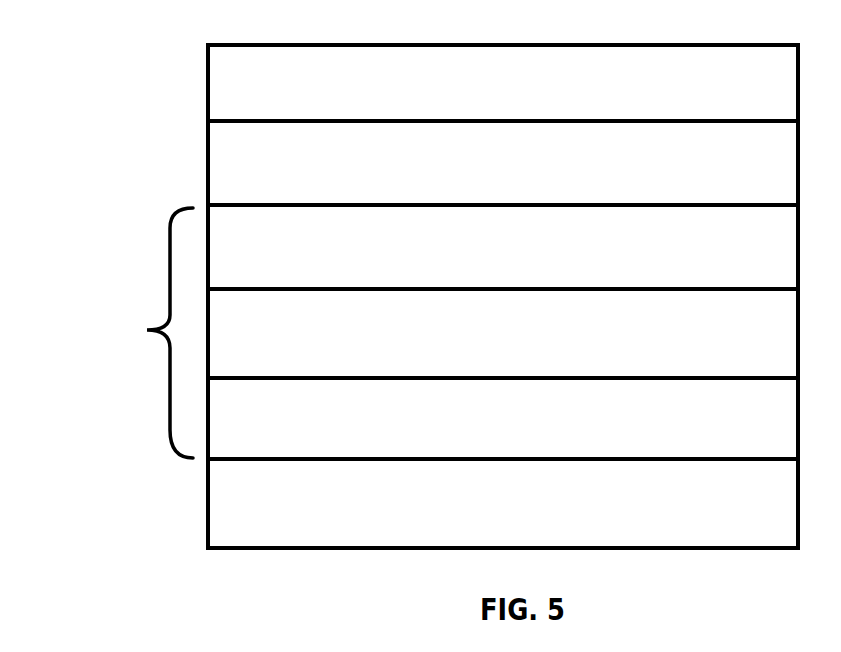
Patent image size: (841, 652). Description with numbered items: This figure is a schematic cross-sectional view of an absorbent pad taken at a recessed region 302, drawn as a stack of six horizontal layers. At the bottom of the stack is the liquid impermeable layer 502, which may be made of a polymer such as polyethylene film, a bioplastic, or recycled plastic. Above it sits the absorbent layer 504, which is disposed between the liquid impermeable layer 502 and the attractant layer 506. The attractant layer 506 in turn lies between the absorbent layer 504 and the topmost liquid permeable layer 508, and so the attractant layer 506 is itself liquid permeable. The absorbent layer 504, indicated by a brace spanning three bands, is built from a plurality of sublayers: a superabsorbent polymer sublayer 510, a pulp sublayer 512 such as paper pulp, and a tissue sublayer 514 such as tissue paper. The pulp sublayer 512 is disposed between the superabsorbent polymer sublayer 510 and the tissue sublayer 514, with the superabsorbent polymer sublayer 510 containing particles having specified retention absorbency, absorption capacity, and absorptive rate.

The recessed region 302 is at (98, 57).
The liquid impermeable layer 502 is at (540, 510).
The absorbent layer 504 is at (147, 330).
The attractant layer 506 is at (540, 180).
The liquid permeable layer 508 is at (540, 98).
The superabsorbent polymer sublayer 510 is at (540, 262).
The pulp sublayer 512 is at (540, 347).
The tissue sublayer 514 is at (540, 428).